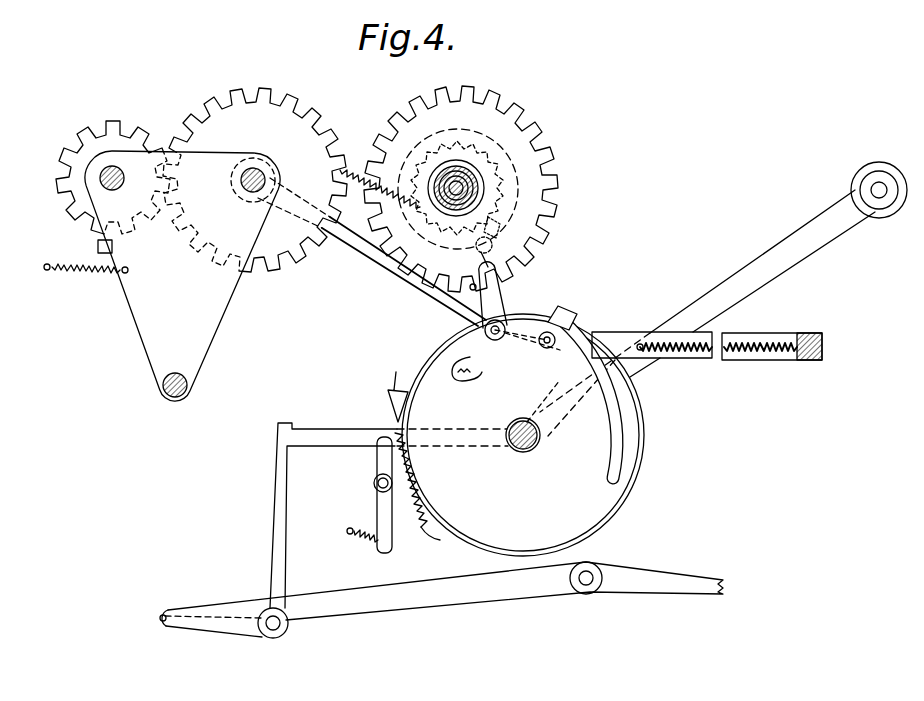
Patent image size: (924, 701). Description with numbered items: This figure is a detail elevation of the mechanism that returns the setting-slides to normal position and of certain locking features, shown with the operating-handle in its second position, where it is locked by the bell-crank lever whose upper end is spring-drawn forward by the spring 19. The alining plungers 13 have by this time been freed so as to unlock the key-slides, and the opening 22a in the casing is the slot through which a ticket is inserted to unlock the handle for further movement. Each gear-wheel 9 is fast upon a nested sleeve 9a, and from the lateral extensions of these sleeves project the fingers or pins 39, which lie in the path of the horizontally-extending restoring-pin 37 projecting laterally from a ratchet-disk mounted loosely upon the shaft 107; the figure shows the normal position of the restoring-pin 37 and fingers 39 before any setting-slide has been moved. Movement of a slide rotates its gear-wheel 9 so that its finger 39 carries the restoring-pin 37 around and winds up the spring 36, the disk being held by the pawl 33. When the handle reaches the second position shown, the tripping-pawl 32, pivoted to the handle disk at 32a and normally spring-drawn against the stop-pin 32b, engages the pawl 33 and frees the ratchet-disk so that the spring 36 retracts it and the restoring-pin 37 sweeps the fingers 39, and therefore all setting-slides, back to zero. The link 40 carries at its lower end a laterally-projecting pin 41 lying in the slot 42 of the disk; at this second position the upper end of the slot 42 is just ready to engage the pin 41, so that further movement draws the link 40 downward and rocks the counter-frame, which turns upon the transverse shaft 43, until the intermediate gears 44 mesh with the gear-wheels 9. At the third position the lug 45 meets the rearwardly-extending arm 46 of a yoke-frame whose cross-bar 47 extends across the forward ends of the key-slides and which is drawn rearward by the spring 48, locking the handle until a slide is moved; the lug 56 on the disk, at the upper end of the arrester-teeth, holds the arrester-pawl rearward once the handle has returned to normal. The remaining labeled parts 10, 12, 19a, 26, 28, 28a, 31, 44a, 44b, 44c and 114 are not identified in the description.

The gear-wheel 9 is at (461, 189).
The nested sleeve 9a is at (428, 168).
The pinion 10 is at (98, 189).
The gear 12 is at (118, 129).
The alining plungers 13 is at (170, 396).
The spring 19 is at (201, 244).
The spring 19a is at (93, 274).
The opening 22a is at (347, 415).
The arm 26 is at (763, 267).
The lever 28 is at (448, 596).
The pivot 28a is at (586, 586).
The ratchet 31 is at (483, 192).
The tripping-pawl 32 is at (506, 302).
The pivot 32a is at (478, 322).
The stop-pin 32b is at (464, 378).
The pawl 33 is at (495, 228).
The spring 36 is at (444, 188).
The restoring-pin 37 is at (438, 224).
The fingers 39 is at (502, 234).
The link 40 is at (359, 248).
The pin 41 is at (487, 500).
The slot 42 is at (548, 458).
The transverse shaft 43 is at (272, 512).
The intermediate gears 44 is at (516, 448).
The ratchet segment 44a is at (413, 520).
The pawl 44b is at (378, 463).
The spring 44c is at (360, 528).
The lug 45 is at (562, 312).
The rearwardly-extending arm 46 is at (746, 340).
The cross-bar 47 is at (813, 337).
The spring 48 is at (752, 358).
The lug 56 is at (398, 387).
The shaft 107 is at (462, 174).
The gear wheel 114 is at (255, 180).